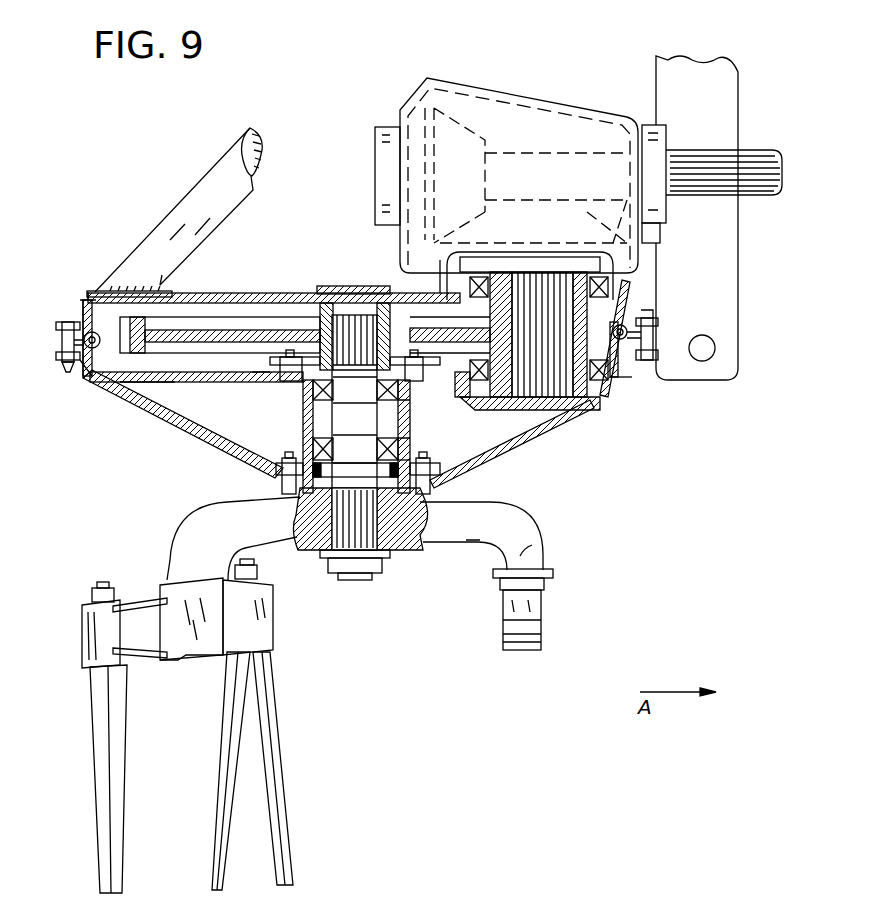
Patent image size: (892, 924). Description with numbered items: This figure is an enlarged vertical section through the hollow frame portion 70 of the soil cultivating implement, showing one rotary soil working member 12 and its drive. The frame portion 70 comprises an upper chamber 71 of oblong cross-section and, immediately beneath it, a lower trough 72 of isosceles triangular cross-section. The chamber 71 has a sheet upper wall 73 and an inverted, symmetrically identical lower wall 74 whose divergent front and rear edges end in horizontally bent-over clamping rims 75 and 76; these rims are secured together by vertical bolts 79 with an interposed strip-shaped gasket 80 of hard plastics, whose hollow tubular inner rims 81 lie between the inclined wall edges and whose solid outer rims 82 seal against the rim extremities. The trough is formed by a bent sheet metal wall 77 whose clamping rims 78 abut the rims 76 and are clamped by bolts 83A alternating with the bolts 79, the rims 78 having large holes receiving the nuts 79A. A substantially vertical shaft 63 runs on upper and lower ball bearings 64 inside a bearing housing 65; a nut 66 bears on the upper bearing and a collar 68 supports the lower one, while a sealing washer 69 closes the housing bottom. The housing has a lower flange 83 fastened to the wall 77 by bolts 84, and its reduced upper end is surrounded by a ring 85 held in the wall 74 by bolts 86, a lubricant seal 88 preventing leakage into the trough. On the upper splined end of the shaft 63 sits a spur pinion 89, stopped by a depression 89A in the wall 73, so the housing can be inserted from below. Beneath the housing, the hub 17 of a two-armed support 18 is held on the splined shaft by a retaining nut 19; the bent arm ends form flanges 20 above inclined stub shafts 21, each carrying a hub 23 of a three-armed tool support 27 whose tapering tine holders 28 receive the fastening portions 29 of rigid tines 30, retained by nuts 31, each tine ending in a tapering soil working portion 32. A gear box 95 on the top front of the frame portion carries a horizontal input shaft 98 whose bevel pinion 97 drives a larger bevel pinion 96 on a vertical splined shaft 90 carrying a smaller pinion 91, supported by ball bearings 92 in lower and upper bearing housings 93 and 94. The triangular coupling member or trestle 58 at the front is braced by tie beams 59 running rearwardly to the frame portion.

The rotary soil working member 12 is at (438, 609).
The hub 17 is at (320, 545).
The support 18 is at (528, 507).
The retaining nut 19 is at (374, 582).
The flange 20 is at (553, 576).
The stub shaft 21 is at (530, 618).
The hub 23 is at (168, 584).
The tool support 27 is at (200, 662).
The tine holder 28 is at (266, 614).
The fastening portion 29 is at (104, 584).
The rigid tine 30 is at (282, 742).
The fastening nut 31 is at (122, 600).
The soil working portion 32 is at (120, 862).
The coupling member or trestle 58 is at (656, 70).
The tie beam 59 is at (240, 207).
The shaft 63 is at (360, 428).
The ball bearing 64 is at (400, 404).
The bearing housing 65 is at (408, 450).
The nut 66 is at (334, 390).
The collar 68 is at (360, 470).
The sealing washer 69 is at (420, 510).
The frame portion 70 is at (117, 420).
The upper chamber 71 is at (96, 350).
The lower trough 72 is at (168, 400).
The upper wall 73 is at (270, 288).
The lower wall 74 is at (224, 384).
The clamping rim 75 is at (656, 318).
The clamping rim 76 is at (688, 352).
The sheet metal wall 77 is at (186, 440).
The clamping rim 78 is at (62, 364).
The bolt 79 is at (68, 322).
The nut 79A is at (78, 380).
The gasket 80 is at (88, 300).
The inner rim 81 is at (98, 336).
The outer rim 82 is at (62, 335).
The flange 83 is at (276, 478).
The bolt 83A is at (648, 318).
The bolt 84 is at (430, 486).
The ring 85 is at (476, 382).
The bolt 86 is at (280, 384).
The lubricant seal 88 is at (296, 385).
The pinion 89 is at (208, 320).
The depression 89A is at (343, 297).
The splined shaft 90 is at (548, 420).
The pinion 91 is at (640, 278).
The ball bearing 92 is at (612, 282).
The lower bearing housing 93 is at (570, 412).
The upper bearing housing 94 is at (444, 288).
The gear box 95 is at (514, 94).
The larger bevel pinion 96 is at (583, 221).
The bevel pinion 97 is at (462, 131).
The rotary input shaft 98 is at (712, 150).